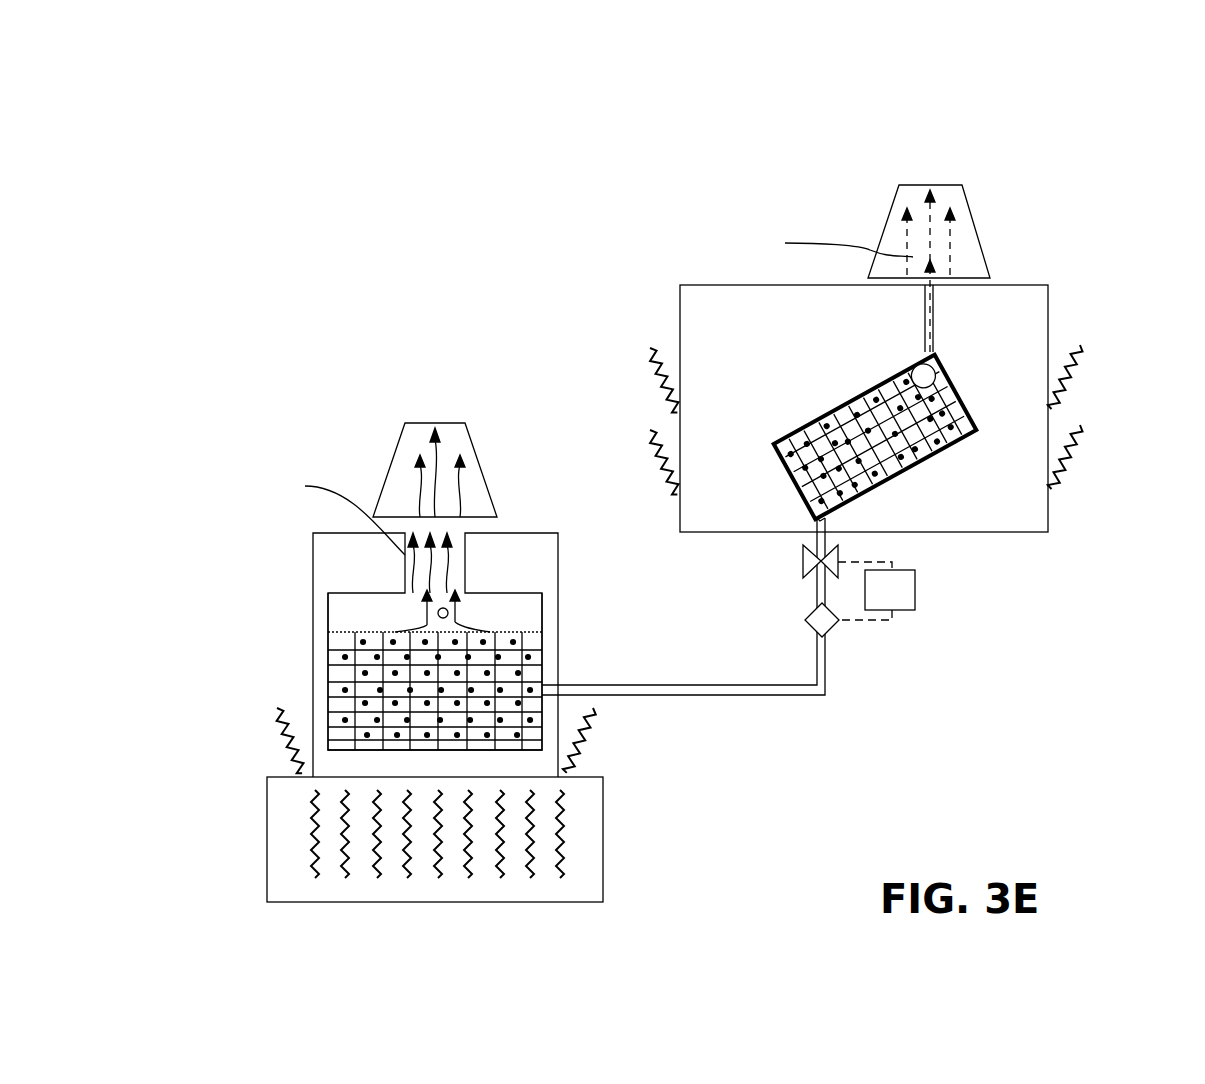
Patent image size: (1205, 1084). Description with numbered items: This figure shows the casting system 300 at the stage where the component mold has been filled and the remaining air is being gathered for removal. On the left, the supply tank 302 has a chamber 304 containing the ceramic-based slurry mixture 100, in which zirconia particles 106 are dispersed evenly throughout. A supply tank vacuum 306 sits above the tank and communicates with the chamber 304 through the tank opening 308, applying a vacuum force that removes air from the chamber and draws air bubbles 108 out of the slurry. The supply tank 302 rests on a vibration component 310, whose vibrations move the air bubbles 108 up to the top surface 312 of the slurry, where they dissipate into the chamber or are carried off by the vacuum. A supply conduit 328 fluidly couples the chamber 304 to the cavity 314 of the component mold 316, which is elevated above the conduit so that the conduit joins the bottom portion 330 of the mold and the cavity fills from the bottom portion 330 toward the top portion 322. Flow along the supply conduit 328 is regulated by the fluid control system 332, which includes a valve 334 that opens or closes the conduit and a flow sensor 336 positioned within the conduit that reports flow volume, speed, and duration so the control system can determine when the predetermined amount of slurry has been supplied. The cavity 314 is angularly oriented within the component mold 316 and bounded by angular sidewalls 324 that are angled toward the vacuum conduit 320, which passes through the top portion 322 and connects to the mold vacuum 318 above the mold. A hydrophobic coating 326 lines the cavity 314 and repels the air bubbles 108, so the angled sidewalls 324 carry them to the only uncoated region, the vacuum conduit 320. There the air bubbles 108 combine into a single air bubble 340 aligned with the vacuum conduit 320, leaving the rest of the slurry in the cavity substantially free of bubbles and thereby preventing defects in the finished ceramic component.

The casting system 300 is at (572, 150).
The supply tank 302 is at (340, 578).
The chamber 304 is at (372, 608).
The supply tank vacuum 306 is at (410, 440).
The tank opening 308 is at (455, 548).
The vibration component 310 is at (300, 832).
The top surface 312 is at (538, 632).
The cavity 314 is at (800, 408).
The component mold 316 is at (702, 318).
The mold vacuum 318 is at (907, 198).
The vacuum conduit 320 is at (940, 344).
The top portion 322 is at (1078, 312).
The angular sidewall 324 is at (846, 382).
The coating 326 is at (907, 472).
The supply conduit 328 is at (733, 693).
The bottom portion 330 is at (1068, 513).
The fluid control system 332 is at (915, 592).
The valve 334 is at (805, 563).
The flow sensor 336 is at (810, 625).
The single air bubble 340 is at (972, 425).
The ceramic-based slurry mixture 100 is at (357, 685).
The zirconia particles 106 is at (358, 735).
The air bubbles 108 is at (449, 614).